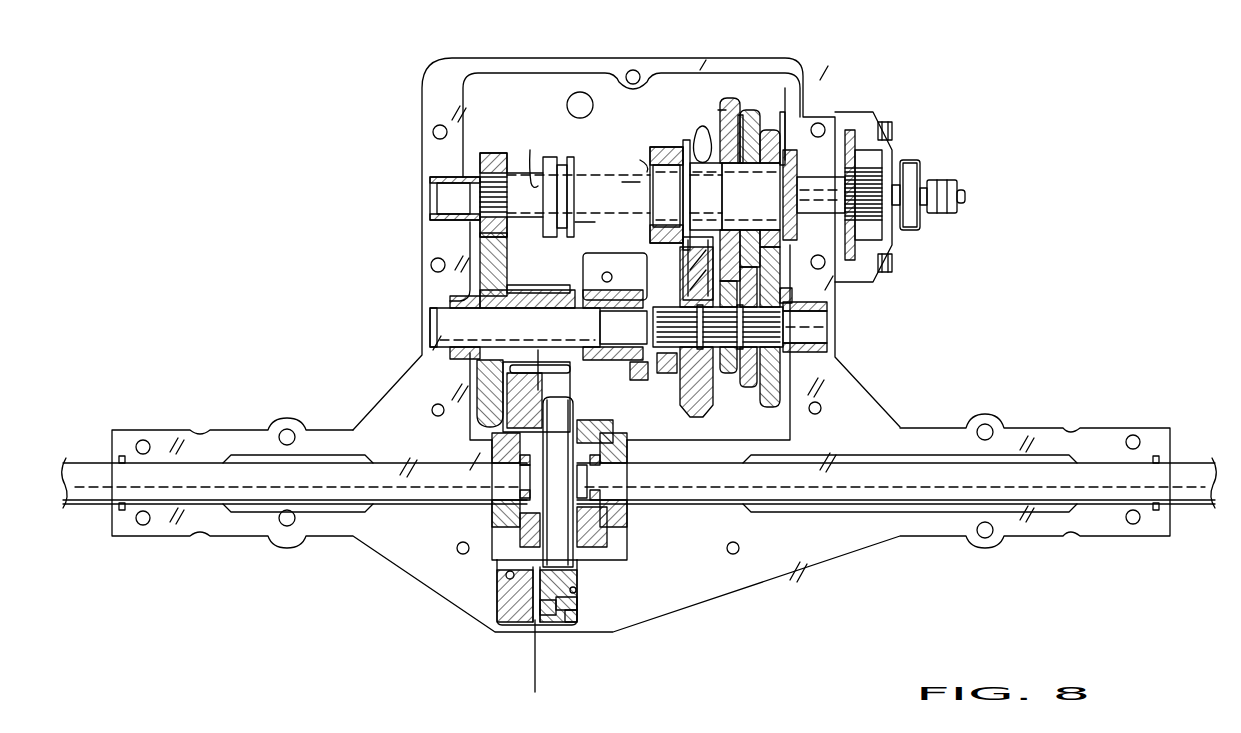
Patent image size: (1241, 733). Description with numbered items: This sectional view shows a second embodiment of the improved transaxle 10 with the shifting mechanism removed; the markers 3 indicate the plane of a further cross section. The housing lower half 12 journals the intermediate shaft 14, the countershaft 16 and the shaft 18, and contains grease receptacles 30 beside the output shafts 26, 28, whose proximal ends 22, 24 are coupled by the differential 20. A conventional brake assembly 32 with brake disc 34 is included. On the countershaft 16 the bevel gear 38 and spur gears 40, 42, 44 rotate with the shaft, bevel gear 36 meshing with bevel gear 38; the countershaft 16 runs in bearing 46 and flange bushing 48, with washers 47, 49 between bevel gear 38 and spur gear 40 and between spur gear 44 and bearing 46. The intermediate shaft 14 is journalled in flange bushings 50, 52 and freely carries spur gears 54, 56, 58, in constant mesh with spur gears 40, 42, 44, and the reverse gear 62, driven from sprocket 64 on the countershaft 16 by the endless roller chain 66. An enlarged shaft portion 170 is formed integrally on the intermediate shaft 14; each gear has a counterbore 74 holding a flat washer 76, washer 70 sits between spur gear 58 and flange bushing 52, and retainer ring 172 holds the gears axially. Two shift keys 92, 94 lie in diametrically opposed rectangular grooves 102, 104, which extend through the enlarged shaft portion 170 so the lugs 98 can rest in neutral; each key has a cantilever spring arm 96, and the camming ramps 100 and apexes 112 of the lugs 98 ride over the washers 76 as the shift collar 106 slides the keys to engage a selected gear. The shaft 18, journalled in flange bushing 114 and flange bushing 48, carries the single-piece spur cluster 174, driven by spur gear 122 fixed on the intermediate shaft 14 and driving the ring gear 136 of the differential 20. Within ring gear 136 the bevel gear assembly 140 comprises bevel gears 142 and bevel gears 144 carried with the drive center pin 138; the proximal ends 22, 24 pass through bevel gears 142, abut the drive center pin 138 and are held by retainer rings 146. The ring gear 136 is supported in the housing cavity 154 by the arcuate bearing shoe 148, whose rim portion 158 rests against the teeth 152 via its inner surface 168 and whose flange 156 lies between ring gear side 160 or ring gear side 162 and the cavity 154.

The improved transaxle 10 is at (1030, 79).
The housing lower half 12 is at (777, 567).
The intermediate shaft 14 is at (517, 190).
The countershaft 16 is at (807, 328).
The shaft 18 is at (450, 330).
The differential 20 is at (460, 587).
The proximal end 22 is at (492, 498).
The proximal end 24 is at (627, 498).
The output shaft 26 is at (95, 477).
The output shaft 28 is at (1183, 475).
The grease receptacles 30 is at (247, 455).
The brake assembly 32 is at (940, 153).
The brake disc 34 is at (852, 132).
The bevel gear 36 is at (638, 374).
The bevel gear 38 is at (688, 390).
The spur gear 40 is at (725, 375).
The spur gear 42 is at (750, 385).
The spur gear 44 is at (766, 405).
The bearing 46 is at (833, 350).
The washer 47 is at (722, 347).
The flange bushing 48 is at (630, 356).
The washer 49 is at (783, 302).
The flange bushing 50 is at (447, 176).
The flange bushing 52 is at (797, 177).
The spur gear 54 is at (725, 98).
The spur gear 56 is at (753, 110).
The spur gear 58 is at (777, 130).
The reverse gear 62 is at (665, 147).
The sprocket 64 is at (660, 375).
The endless roller chain 66 is at (640, 272).
The washer 70 is at (800, 140).
The counterbore 74 is at (748, 115).
The flat washer 76 is at (660, 150).
The shift key 92 is at (578, 165).
The shift key 94 is at (585, 228).
The cantilever spring arm 96 is at (627, 183).
The lug 98 is at (706, 196).
The camming ramps 100 is at (703, 160).
The rectangular groove 102 is at (530, 150).
The rectangular groove 104 is at (517, 230).
The shift collar 106 is at (552, 160).
The apex 112 is at (665, 196).
The flange bushing 114 is at (450, 302).
The spur gear 122 is at (492, 155).
The ring gear 136 is at (577, 600).
The drive center pin 138 is at (595, 556).
The bevel gear assembly 140 is at (462, 532).
The bevel gears 142 is at (492, 455).
The bevel gears 144 is at (520, 412).
The retainer rings 146 is at (547, 480).
The bearing shoe 148 is at (547, 605).
The teeth 152 is at (497, 606).
The cavity 154 is at (577, 618).
The flange 156 is at (500, 600).
The shoe rim portion 158 is at (517, 620).
The ring gear side 160 is at (506, 576).
The ring gear side 162 is at (576, 590).
The inner surface 168 is at (543, 590).
The enlarged shaft portion 170 is at (722, 110).
The retainer ring 172 is at (647, 167).
The spur cluster 174 is at (487, 263).
The section line 3 is at (540, 357).